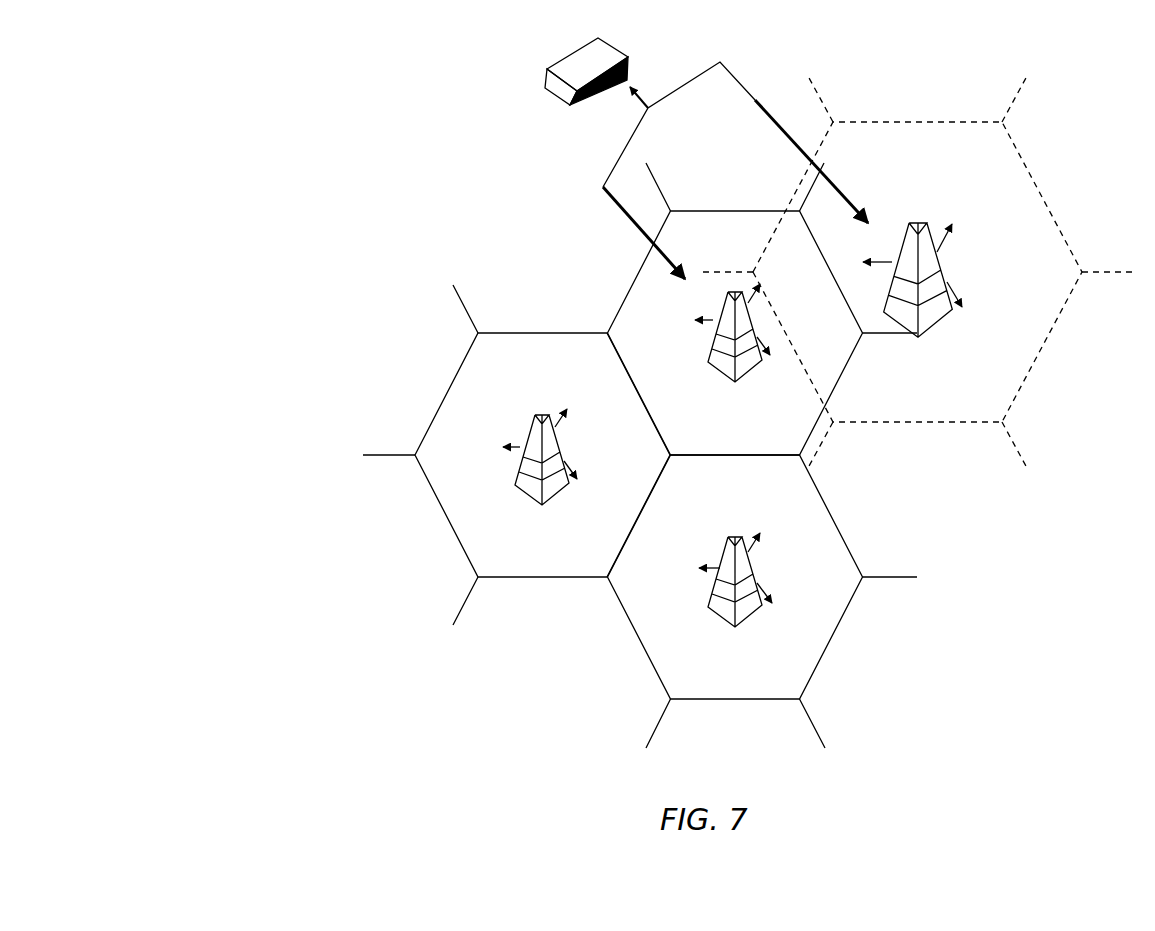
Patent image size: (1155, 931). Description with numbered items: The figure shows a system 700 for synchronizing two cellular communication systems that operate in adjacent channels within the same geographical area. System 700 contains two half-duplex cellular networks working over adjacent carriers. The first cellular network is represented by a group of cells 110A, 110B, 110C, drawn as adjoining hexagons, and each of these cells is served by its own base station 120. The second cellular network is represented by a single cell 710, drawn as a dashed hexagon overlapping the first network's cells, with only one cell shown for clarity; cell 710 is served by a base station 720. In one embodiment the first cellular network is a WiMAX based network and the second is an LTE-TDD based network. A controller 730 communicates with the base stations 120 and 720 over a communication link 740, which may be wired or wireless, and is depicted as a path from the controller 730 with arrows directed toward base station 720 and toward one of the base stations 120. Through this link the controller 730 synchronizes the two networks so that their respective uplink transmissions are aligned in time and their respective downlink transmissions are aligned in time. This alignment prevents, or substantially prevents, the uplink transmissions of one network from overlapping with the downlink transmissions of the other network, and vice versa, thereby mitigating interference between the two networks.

The system 700 is at (347, 727).
The cell 710 is at (1047, 203).
The base station 720 is at (940, 270).
The controller 730 is at (550, 100).
The communication link 740 is at (752, 110).
The cell 110A is at (642, 262).
The cell 110B is at (635, 633).
The cell 110C is at (440, 510).
The base station 120 is at (518, 478).